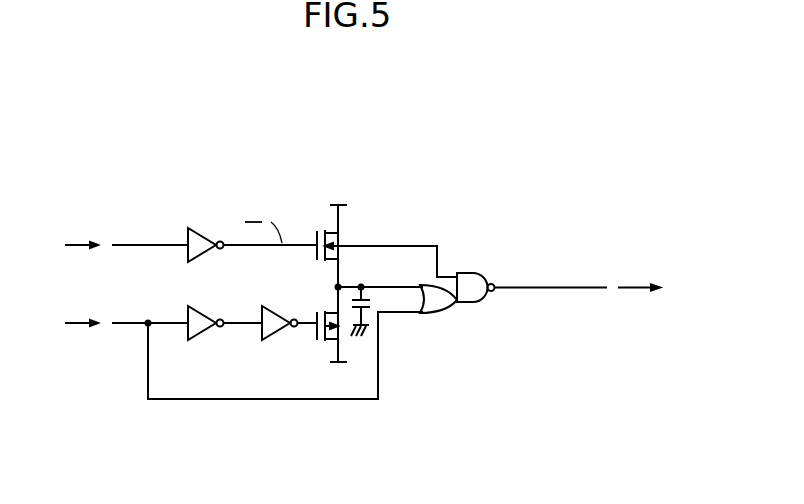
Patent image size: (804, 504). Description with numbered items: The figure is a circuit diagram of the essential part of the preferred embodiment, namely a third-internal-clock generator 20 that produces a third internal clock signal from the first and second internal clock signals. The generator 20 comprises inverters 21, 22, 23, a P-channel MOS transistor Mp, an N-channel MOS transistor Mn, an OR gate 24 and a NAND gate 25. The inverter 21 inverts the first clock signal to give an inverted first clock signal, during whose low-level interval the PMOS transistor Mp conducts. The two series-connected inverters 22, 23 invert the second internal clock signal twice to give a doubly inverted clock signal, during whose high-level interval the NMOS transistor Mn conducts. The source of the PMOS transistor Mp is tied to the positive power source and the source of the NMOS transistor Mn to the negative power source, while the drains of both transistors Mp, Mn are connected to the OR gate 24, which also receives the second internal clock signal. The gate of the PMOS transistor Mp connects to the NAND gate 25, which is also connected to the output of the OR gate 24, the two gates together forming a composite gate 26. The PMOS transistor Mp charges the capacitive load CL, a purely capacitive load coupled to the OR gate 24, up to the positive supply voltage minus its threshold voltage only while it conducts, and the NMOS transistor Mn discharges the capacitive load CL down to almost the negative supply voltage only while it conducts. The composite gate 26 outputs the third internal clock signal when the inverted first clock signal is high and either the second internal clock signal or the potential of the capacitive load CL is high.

The third-internal-clock generator 20 is at (333, 135).
The inverter 21 is at (205, 226).
The inverter 22 is at (205, 342).
The inverter 23 is at (272, 342).
The OR gate 24 is at (445, 314).
The NAND gate 25 is at (471, 273).
The composite gate 26 is at (520, 262).
The P-channel MOS transistor Mp is at (335, 240).
The N-channel MOS transistor Mn is at (330, 312).
The capacitive load CL is at (372, 315).